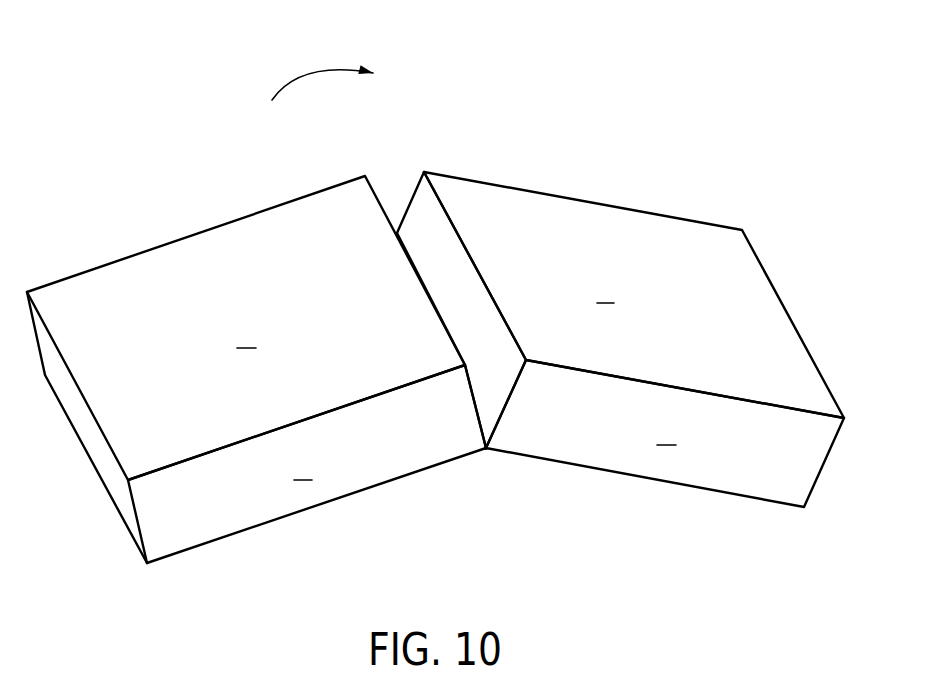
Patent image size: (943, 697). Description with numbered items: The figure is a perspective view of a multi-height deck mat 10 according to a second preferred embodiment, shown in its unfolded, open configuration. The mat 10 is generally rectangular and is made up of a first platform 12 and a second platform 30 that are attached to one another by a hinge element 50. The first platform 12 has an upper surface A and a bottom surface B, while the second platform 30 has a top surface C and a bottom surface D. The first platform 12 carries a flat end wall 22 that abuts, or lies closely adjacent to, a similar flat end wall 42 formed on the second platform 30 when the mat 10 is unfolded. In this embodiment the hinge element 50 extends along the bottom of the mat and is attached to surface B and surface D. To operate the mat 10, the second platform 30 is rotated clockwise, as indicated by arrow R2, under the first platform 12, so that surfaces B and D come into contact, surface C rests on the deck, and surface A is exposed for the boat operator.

The multi-height deck mat 10 is at (613, 115).
The first platform 12 is at (135, 218).
The second platform 30 is at (768, 220).
The flat end wall 22 is at (467, 308).
The flat end wall 42 is at (450, 243).
The hinge element 50 is at (486, 450).
The arrow indicating clockwise rotation R2 is at (322, 67).